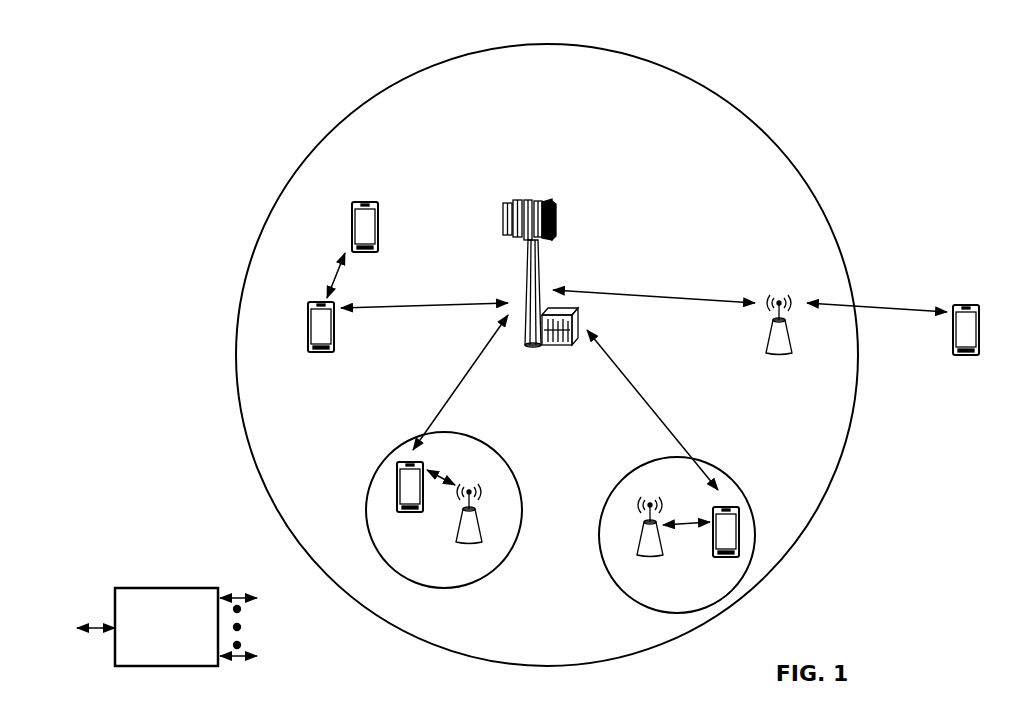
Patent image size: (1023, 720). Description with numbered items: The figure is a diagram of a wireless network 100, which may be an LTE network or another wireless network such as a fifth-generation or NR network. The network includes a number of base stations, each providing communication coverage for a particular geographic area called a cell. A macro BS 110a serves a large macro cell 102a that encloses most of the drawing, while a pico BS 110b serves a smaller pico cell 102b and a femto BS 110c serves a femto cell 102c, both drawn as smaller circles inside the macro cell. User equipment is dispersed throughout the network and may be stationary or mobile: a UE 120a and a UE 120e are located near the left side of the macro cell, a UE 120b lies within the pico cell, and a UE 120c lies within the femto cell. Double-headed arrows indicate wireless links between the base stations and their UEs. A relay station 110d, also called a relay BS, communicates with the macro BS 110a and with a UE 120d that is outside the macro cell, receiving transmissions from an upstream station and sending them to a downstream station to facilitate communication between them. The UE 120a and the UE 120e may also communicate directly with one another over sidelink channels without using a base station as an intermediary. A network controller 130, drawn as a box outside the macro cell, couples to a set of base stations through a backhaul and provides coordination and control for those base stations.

The wireless network 100 is at (157, 42).
The macro cell 102a is at (757, 129).
The pico cell 102b is at (508, 463).
The femto cell 102c is at (632, 472).
The macro BS 110a is at (538, 191).
The pico BS 110b is at (485, 530).
The femto BS 110c is at (636, 541).
The relay station 110d is at (780, 298).
The UE 120a is at (307, 323).
The UE 120b is at (404, 513).
The UE 120c is at (717, 557).
The UE 120d is at (975, 303).
The UE 120e is at (352, 215).
The network controller 130 is at (165, 587).